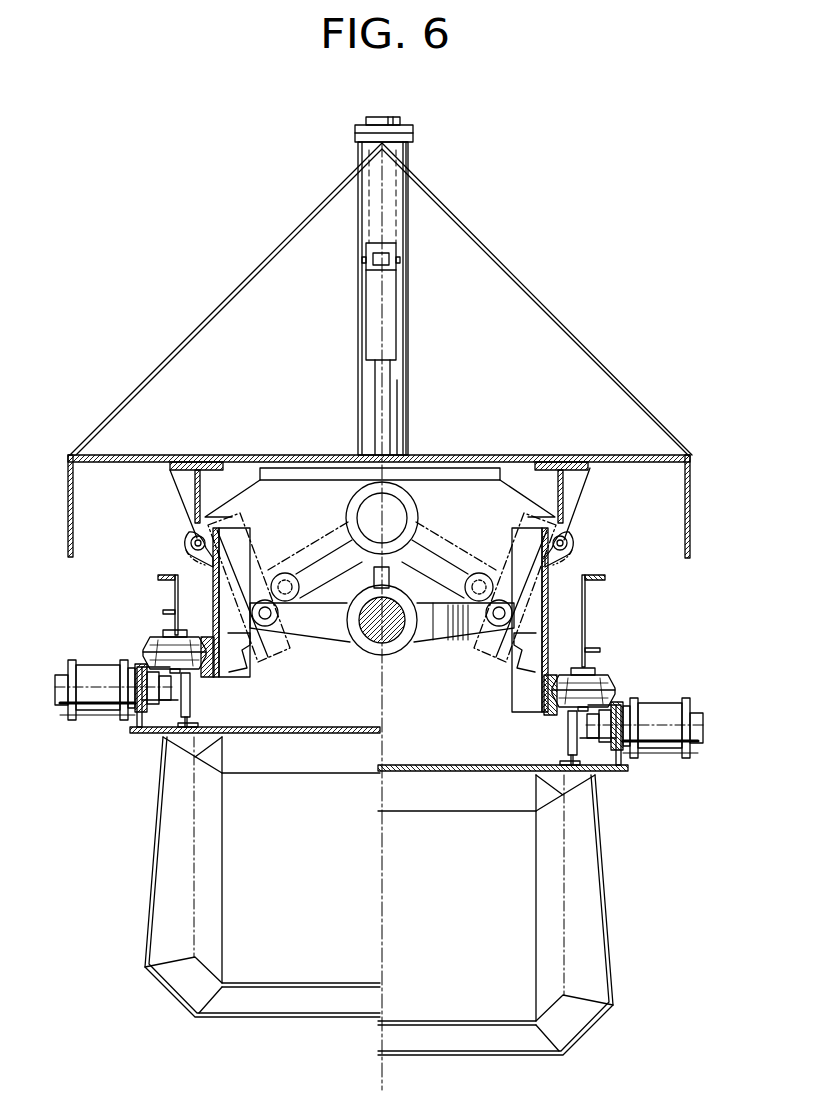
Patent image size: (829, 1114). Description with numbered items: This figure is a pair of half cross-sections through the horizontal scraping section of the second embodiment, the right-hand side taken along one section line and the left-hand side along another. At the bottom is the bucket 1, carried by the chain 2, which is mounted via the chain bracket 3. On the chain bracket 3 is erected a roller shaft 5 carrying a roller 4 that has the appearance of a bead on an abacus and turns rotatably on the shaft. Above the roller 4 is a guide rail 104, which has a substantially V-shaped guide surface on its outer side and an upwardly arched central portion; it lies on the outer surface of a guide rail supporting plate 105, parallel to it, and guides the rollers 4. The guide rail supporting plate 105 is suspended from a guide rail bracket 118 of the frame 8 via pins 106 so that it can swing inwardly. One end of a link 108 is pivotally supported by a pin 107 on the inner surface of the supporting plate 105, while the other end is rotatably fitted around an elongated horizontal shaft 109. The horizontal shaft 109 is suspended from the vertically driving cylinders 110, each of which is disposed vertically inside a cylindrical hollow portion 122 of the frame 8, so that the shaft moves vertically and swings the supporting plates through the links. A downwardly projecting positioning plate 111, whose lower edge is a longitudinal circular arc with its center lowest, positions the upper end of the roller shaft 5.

The bucket 1 is at (150, 902).
The chain 2 is at (70, 660).
The chain bracket 3 is at (140, 730).
The roller 4 is at (150, 652).
The roller shaft 5 is at (188, 680).
The frame of the horizontal scraping section 8 is at (548, 318).
The guide rail 104 is at (185, 635).
The guide rail supporting plate 105 is at (212, 572).
The pin 106 is at (190, 538).
The pin 107 is at (258, 585).
The link 108 is at (322, 625).
The horizontal shaft 109 is at (375, 648).
The vertically driving cylinder 110 is at (390, 313).
The positioning plate 111 is at (168, 588).
The guide rail bracket 118 is at (573, 487).
The cylindrical hollow portion 122 is at (357, 322).